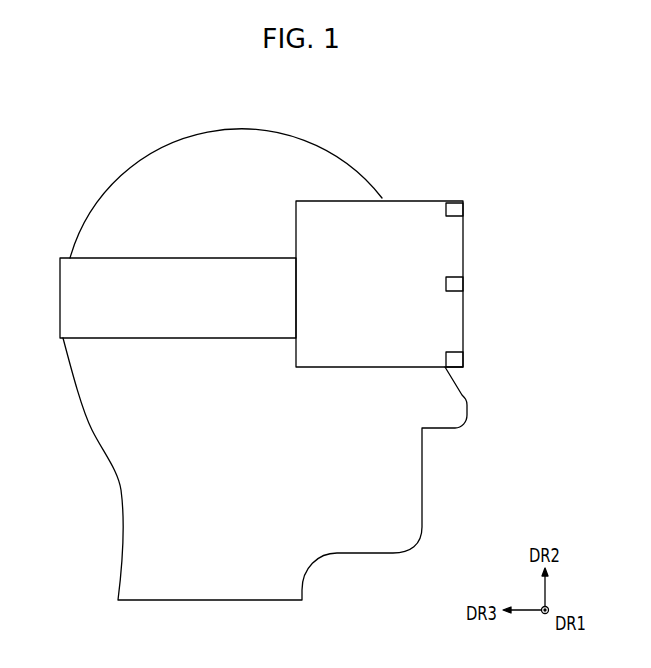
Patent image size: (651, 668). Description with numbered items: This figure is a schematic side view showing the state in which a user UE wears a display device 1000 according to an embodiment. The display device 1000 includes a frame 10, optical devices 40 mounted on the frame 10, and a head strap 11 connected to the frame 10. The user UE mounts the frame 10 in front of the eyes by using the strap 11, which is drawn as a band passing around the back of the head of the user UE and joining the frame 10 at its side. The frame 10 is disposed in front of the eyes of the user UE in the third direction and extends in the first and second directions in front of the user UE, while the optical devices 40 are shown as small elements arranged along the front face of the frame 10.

The display device 1000 is at (279, 255).
The frame 10 is at (464, 250).
The head strap 11 is at (90, 257).
The optical devices 40 is at (464, 209).
The user UE is at (92, 431).